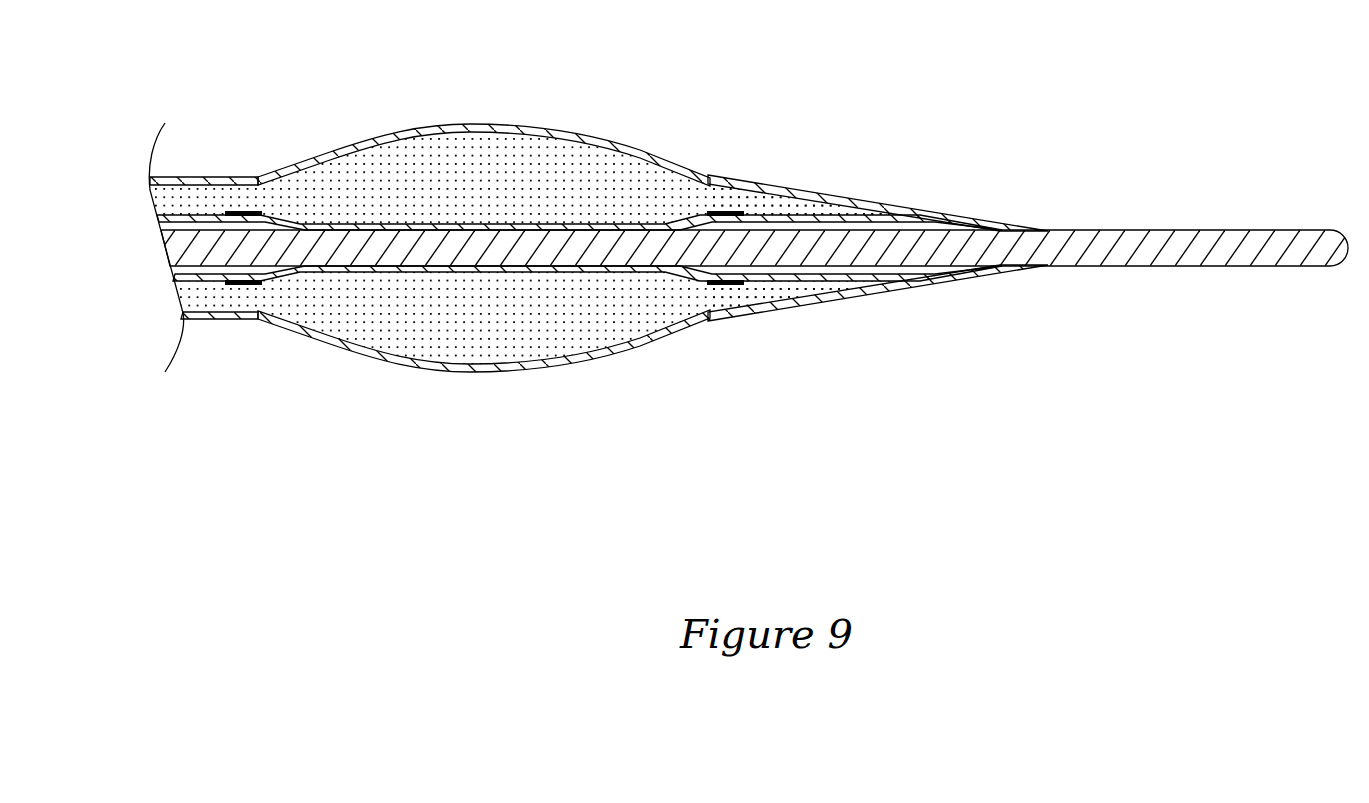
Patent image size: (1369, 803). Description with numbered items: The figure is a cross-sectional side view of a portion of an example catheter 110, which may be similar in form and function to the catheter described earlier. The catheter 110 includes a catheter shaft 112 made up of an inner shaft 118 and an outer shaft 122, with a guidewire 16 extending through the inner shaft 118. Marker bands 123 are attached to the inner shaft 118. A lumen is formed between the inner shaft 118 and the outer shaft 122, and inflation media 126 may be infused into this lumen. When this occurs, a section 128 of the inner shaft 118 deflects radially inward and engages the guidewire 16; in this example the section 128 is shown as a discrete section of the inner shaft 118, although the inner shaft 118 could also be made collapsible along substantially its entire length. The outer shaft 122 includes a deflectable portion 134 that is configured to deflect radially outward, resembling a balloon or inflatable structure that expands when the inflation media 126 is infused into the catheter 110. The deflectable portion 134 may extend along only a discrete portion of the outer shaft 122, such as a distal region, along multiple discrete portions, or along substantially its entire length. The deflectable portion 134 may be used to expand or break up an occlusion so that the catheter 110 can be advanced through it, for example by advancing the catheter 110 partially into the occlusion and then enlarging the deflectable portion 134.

The catheter 110 is at (643, 78).
The catheter shaft 112 is at (216, 168).
The deflectable portion 134 is at (362, 142).
The section 128 is at (528, 229).
The outer shaft 122 is at (722, 180).
The inflation media 126 is at (782, 203).
The guidewire 16 is at (1178, 243).
The inner shaft 118 is at (823, 280).
The marker bands 123 is at (237, 286).